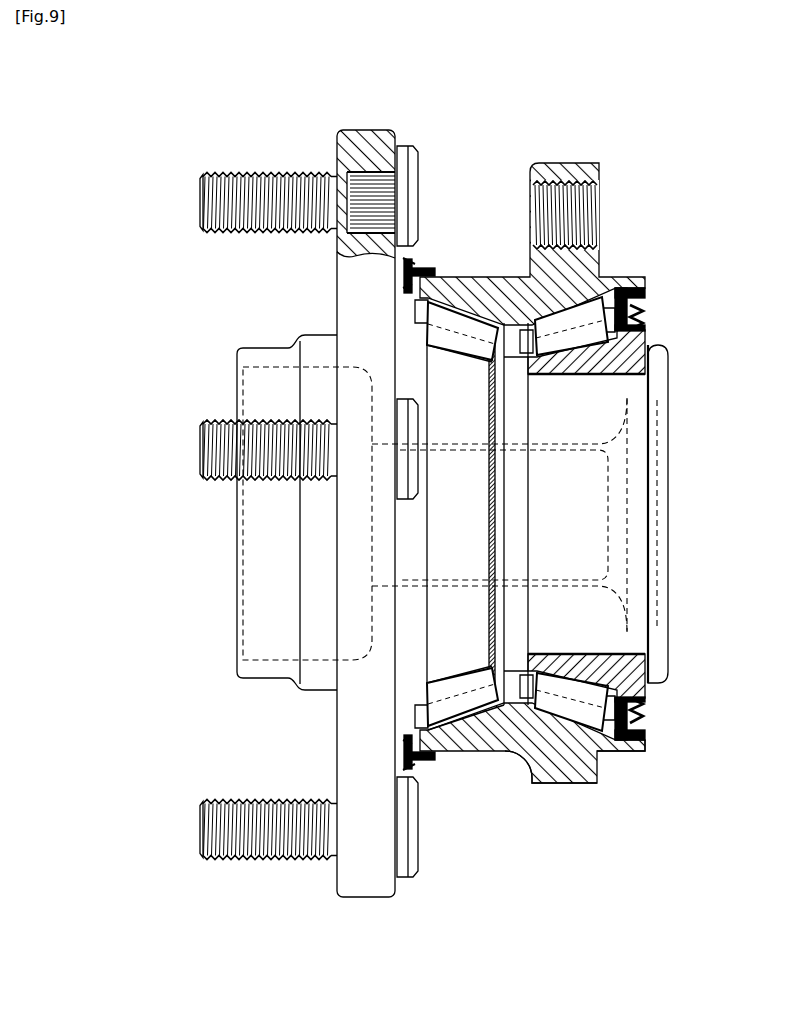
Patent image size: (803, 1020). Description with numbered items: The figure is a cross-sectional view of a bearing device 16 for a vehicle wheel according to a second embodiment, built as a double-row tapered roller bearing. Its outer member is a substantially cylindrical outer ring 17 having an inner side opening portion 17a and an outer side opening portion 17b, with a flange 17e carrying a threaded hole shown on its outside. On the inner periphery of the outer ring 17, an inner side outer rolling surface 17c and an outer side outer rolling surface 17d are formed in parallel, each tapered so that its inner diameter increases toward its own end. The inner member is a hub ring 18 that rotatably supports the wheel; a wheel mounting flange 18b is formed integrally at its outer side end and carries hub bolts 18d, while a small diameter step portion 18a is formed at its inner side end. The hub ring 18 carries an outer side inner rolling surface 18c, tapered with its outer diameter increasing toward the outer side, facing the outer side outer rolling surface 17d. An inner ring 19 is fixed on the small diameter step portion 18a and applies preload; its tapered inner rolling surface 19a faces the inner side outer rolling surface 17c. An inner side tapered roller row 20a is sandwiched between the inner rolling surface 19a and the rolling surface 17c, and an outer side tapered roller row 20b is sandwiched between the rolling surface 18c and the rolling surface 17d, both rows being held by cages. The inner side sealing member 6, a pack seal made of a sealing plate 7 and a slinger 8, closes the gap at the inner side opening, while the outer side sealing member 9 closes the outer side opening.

The bearing device for vehicle wheel 16 is at (101, 101).
The outer ring 17 is at (609, 117).
The inner side opening portion 17a is at (610, 747).
The outer side opening portion 17b is at (440, 760).
The inner side outer rolling surface 17c is at (516, 716).
The outer side outer rolling surface 17d is at (463, 717).
The flange of outer ring with threaded hole 17e is at (561, 165).
The hub ring 18 is at (396, 107).
The small diameter step portion 18a is at (650, 376).
The wheel mounting flange 18b is at (367, 158).
The outer side inner rolling surface 18c is at (458, 686).
The hub bolt 18d is at (222, 172).
The inner ring 19 is at (648, 690).
The inner rolling surface 19a is at (567, 683).
The inner side tapered roller row 20a is at (563, 342).
The outer side tapered roller row 20b is at (462, 343).
The inner side sealing member 6 is at (682, 278).
The sealing plate 7 is at (648, 293).
The slinger 8 is at (648, 317).
The outer side sealing member 9 is at (432, 245).